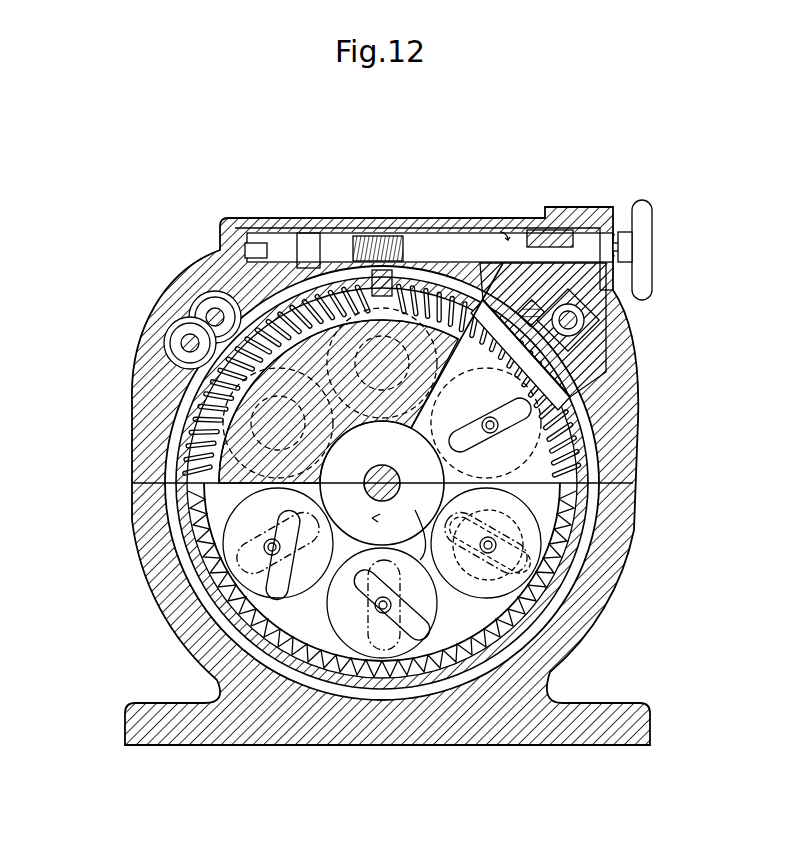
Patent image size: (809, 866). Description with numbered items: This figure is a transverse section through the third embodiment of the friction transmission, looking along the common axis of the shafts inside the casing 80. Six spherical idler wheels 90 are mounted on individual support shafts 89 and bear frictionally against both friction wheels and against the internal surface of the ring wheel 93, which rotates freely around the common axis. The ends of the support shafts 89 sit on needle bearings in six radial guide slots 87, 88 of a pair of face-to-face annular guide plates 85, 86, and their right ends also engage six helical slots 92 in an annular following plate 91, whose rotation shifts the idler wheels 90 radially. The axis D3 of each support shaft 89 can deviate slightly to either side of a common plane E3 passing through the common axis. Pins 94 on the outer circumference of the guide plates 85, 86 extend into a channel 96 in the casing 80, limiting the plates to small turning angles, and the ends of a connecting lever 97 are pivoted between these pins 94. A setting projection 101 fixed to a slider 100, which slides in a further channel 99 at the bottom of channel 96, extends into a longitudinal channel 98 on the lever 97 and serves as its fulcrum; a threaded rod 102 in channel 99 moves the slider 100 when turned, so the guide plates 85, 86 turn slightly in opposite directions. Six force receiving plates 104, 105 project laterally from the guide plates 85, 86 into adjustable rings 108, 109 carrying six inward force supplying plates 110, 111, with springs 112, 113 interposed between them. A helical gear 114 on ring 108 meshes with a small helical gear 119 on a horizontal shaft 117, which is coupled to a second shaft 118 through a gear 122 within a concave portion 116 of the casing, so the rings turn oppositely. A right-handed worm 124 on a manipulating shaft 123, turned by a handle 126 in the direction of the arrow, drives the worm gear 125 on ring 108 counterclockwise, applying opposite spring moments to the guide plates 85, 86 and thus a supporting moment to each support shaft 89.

The casing 80 is at (140, 443).
The guide plate 85 is at (600, 458).
The guide plate 86 is at (505, 630).
The radial guide slot 87 is at (615, 413).
The radial guide slot 88 is at (520, 547).
The support shaft 89 is at (605, 522).
The spherical idler wheel 90 is at (605, 612).
The following plate 91 is at (172, 492).
The helical slot 92 is at (240, 598).
The ring wheel 93 is at (575, 630).
The pin 94 is at (524, 300).
The channel 96 is at (618, 373).
The connecting lever 97 is at (605, 350).
The longitudinal channel 98 is at (605, 327).
The channel 99 is at (648, 245).
The slider 100 is at (567, 260).
The setting projection 101 is at (548, 268).
The threaded rod 102 is at (650, 300).
The force receiving plate 104 is at (265, 310).
The force receiving plate 105 is at (290, 645).
The adjustable ring 108 is at (168, 465).
The adjustable ring 109 is at (215, 518).
The force supplying plate 110 is at (378, 288).
The force supplying plate 111 is at (218, 583).
The spring 112 is at (352, 300).
The spring 113 is at (215, 622).
The helical gear 114 is at (210, 435).
The concave portion 116 is at (190, 365).
The horizontal shaft 117 is at (205, 330).
The horizontal shaft 118 is at (200, 318).
The small helical gear 119 is at (202, 300).
The gear 122 is at (180, 338).
The manipulating shaft 123 is at (490, 243).
The worm 124 is at (400, 262).
The worm gear 125 is at (306, 262).
The handle 126 is at (622, 250).
The axis of the support shaft D3 is at (492, 605).
The common plane E3 is at (560, 580).